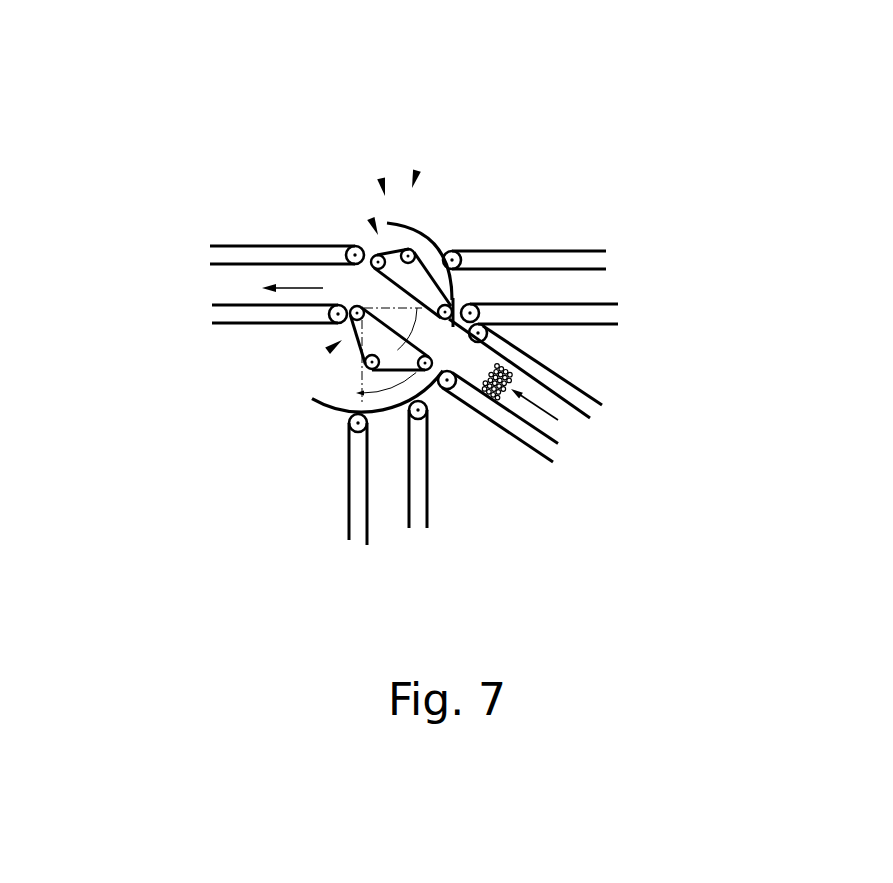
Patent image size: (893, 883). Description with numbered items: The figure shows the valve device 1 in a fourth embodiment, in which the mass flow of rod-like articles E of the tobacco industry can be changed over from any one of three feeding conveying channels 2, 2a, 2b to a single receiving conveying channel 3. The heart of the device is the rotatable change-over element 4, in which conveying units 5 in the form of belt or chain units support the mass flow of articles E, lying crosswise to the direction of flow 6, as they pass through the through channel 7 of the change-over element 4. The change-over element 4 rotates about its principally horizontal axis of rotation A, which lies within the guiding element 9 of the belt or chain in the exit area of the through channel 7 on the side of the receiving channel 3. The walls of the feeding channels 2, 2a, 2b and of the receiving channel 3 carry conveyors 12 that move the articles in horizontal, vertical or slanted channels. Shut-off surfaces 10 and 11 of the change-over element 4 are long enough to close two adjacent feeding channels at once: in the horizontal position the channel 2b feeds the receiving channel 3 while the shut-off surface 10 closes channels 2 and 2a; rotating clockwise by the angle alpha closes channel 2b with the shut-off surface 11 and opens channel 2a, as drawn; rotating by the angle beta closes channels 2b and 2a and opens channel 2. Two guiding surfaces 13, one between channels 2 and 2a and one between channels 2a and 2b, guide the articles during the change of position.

The valve device 1 is at (412, 188).
The feeding conveying channel 2 is at (388, 446).
The feeding conveying channel 2a is at (555, 403).
The feeding conveying channel 2b is at (565, 287).
The receiving conveying channel 3 is at (236, 275).
The rotatable change-over element 4 is at (385, 196).
The conveying unit 5 is at (378, 235).
The direction of flow 6 is at (305, 287).
The through channel 7 is at (318, 407).
The guiding element 9 is at (360, 308).
The shut-off surface 10 is at (345, 420).
The shut-off surface 11 is at (434, 253).
The conveyor 12 is at (258, 265).
The guiding surface 13 is at (454, 325).
The axis of rotation A is at (352, 309).
The rod-like articles E is at (513, 370).